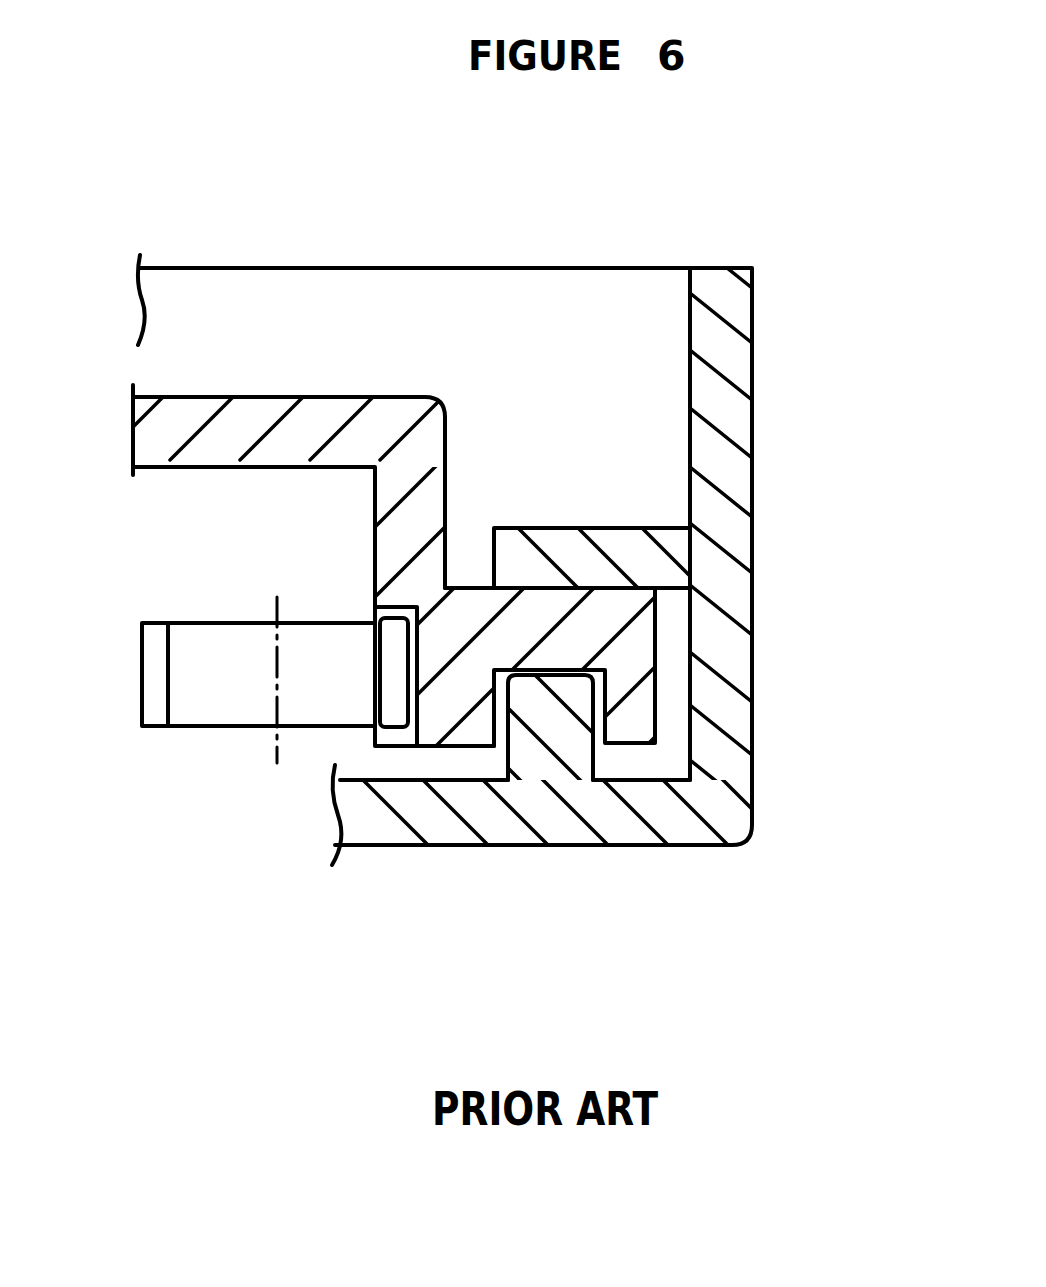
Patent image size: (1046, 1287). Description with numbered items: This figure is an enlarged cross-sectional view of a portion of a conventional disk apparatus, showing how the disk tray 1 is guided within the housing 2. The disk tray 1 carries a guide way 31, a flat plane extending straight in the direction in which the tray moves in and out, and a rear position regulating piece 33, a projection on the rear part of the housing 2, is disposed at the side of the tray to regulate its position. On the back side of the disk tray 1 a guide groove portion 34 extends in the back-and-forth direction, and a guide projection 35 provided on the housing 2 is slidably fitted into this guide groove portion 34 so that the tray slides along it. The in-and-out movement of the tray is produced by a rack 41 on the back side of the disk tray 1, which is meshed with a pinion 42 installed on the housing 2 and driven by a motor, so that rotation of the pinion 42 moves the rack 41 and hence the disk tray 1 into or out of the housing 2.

The disk tray 1 is at (228, 394).
The housing 2 is at (763, 438).
The guide way 31 is at (445, 447).
The rear position regulating piece 33 is at (607, 543).
The guide groove portion 34 is at (567, 690).
The guide projection 35 is at (565, 727).
The rack 41 is at (367, 660).
The pinion 42 is at (203, 623).